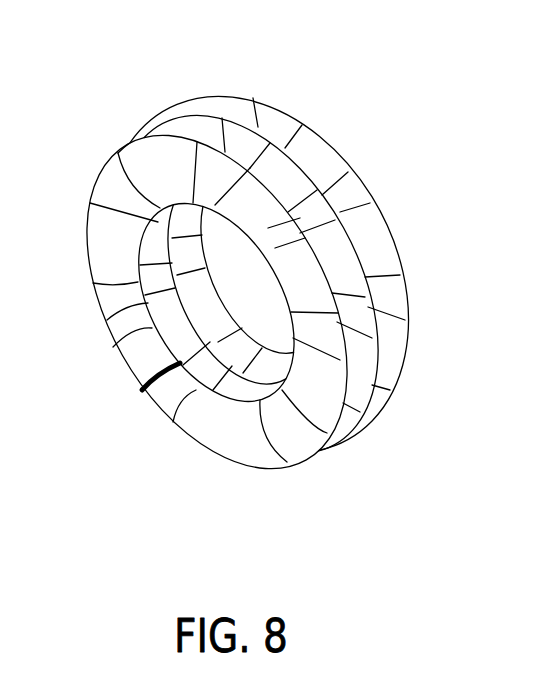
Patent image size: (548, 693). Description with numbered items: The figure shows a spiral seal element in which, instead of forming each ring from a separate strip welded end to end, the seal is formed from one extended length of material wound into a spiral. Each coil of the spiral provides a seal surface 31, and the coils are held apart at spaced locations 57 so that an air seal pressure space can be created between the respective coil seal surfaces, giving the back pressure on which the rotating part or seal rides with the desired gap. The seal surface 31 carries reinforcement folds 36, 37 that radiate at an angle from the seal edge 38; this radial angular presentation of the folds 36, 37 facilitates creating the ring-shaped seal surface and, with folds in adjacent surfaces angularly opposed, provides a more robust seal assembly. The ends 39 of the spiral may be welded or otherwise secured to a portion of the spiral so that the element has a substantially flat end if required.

The spaced locations 57 is at (171, 92).
The seal surface 31 is at (283, 467).
The fold 36 is at (90, 229).
The fold 37 is at (121, 150).
The seal edge 38 is at (113, 347).
The ends of the spiral 39 is at (142, 390).